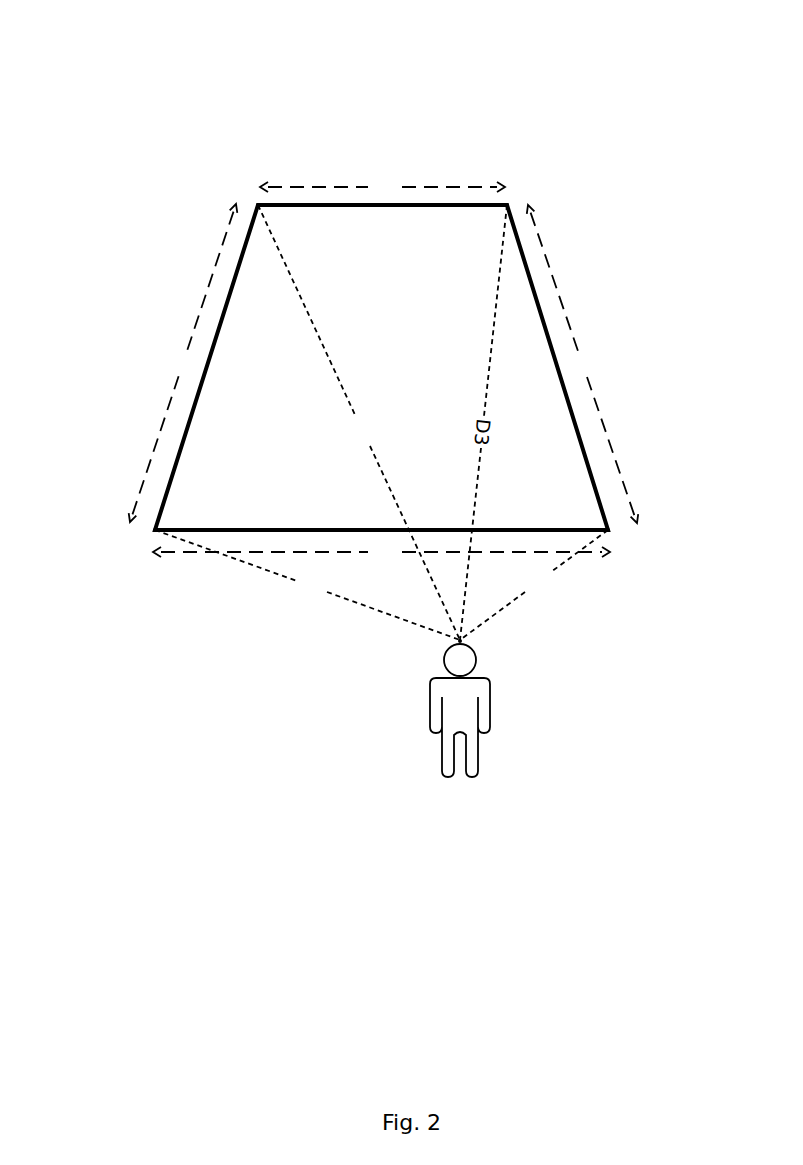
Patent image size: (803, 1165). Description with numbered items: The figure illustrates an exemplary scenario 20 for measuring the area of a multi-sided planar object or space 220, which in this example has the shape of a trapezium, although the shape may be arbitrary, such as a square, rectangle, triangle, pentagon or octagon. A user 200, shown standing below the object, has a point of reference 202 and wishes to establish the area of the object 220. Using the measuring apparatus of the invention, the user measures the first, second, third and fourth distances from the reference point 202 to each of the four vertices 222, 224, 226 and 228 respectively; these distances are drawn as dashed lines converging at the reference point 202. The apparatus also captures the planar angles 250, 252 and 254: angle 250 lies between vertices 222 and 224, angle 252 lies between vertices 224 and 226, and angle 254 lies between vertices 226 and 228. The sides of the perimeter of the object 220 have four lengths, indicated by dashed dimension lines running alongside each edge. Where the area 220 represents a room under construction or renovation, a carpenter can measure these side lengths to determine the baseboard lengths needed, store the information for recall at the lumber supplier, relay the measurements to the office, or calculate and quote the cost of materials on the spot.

The exemplary scenario 20 is at (233, 68).
The user 200 is at (450, 782).
The point of reference 202 is at (470, 642).
The multi-sided planar object or space 220 is at (402, 389).
The vertex 222 is at (153, 533).
The vertex 224 is at (256, 203).
The vertex 226 is at (510, 203).
The vertex 228 is at (611, 532).
The planar angle 250 is at (431, 618).
The planar angle 252 is at (445, 592).
The planar angle 254 is at (478, 603).